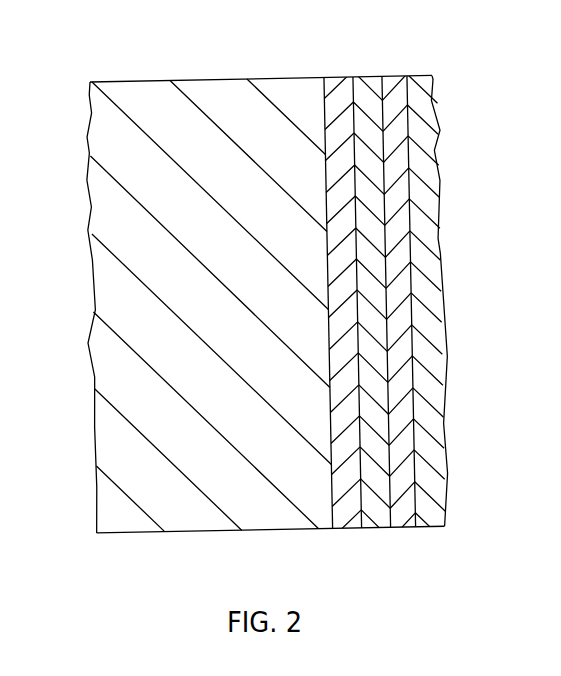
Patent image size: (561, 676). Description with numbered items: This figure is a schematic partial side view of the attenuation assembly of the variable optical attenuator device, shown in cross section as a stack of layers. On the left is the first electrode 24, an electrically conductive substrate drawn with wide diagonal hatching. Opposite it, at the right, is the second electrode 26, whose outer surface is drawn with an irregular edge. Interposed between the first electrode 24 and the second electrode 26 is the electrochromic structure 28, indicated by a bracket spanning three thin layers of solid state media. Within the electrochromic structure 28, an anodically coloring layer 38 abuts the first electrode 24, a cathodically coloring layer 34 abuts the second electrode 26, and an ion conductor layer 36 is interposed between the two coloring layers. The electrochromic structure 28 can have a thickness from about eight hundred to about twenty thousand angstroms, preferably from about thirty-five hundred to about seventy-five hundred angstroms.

The first electrode 24 is at (110, 370).
The second electrode 26 is at (428, 265).
The electrochromic structure 28 is at (371, 298).
The cathodically coloring layer 34 is at (392, 78).
The ion conductor layer 36 is at (368, 80).
The anodically coloring layer 38 is at (340, 87).